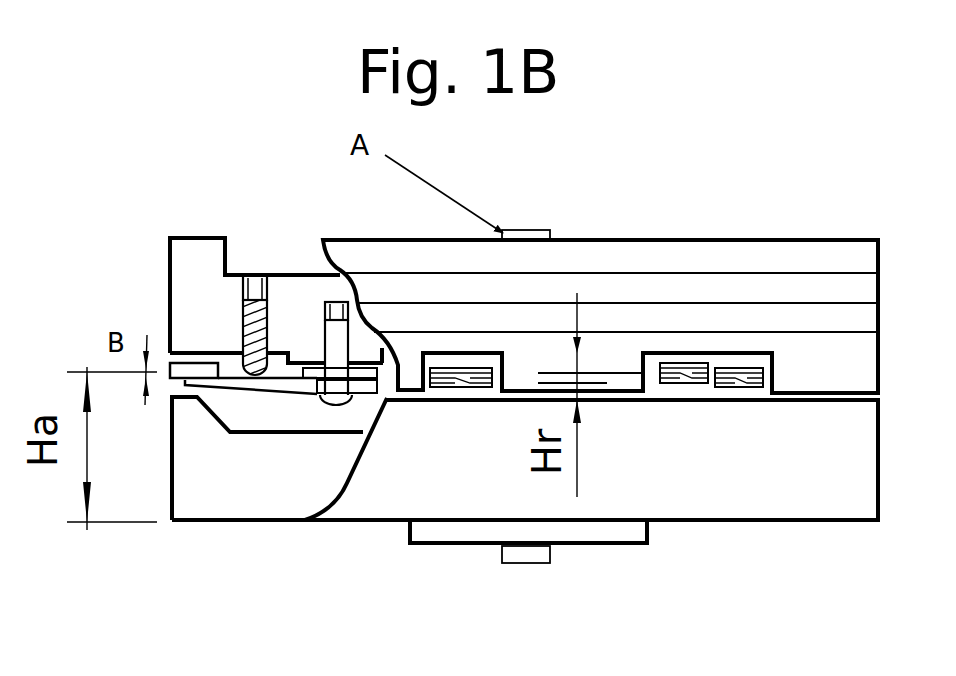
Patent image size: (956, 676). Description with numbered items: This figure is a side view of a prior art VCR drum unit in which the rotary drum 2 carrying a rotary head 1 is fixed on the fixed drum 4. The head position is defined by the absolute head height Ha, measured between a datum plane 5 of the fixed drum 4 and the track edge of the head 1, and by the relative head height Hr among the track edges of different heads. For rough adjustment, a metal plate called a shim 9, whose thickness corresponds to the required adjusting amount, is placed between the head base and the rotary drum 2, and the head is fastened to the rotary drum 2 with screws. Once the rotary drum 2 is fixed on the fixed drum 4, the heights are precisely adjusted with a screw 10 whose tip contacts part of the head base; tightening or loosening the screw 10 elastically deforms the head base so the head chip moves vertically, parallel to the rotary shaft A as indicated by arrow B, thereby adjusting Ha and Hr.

The rotary head 1 is at (171, 361).
The rotary drum 2 is at (662, 285).
The fixed drum 4 is at (647, 462).
The datum plane 5 is at (185, 524).
The shim 9 is at (315, 382).
The screw 10 is at (242, 318).